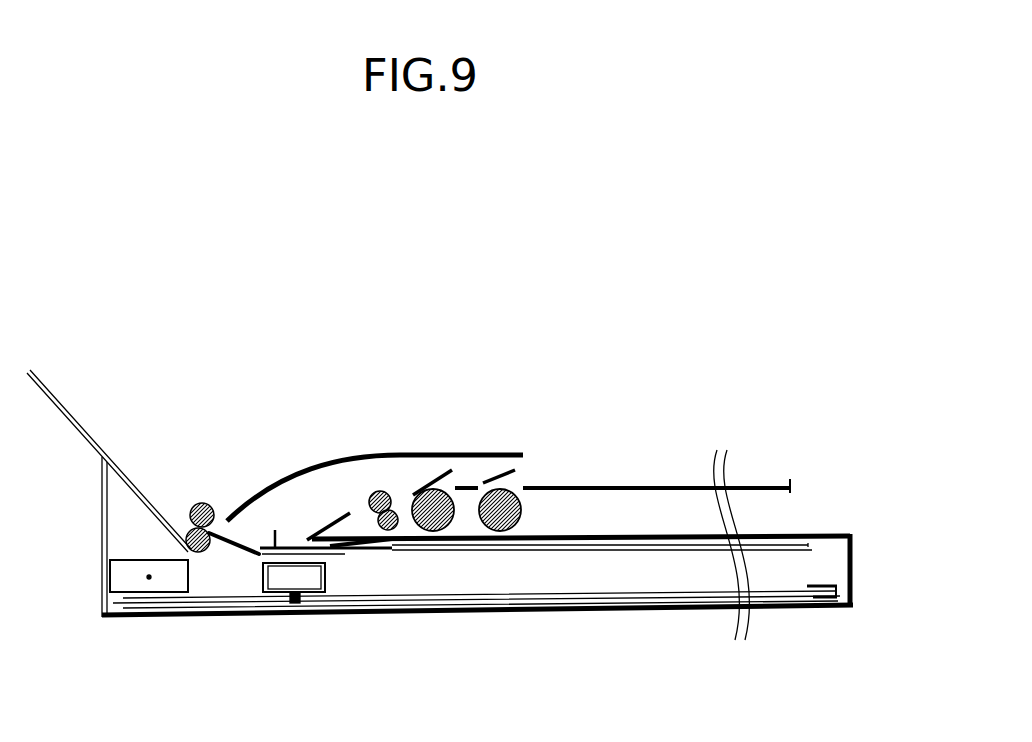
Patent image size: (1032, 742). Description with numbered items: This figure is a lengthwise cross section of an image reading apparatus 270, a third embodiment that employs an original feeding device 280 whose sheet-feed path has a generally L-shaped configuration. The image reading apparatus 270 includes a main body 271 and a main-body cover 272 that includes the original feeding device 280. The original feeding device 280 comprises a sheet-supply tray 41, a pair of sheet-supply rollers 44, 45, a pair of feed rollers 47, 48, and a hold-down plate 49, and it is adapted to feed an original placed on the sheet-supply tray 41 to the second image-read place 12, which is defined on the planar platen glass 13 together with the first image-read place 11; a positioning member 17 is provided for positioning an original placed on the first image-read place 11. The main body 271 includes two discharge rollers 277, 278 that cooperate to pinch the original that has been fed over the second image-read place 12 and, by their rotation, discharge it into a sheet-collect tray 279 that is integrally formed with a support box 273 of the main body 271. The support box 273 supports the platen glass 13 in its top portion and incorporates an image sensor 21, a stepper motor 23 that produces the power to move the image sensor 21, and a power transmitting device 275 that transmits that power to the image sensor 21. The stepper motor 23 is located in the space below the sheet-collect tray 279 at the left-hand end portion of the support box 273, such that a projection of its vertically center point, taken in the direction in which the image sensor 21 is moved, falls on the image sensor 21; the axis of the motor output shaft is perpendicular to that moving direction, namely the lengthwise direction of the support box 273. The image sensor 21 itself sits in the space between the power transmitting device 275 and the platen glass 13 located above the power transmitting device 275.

The image reading apparatus 270 is at (897, 391).
The main body 271 is at (864, 584).
The main-body cover 272 is at (838, 524).
The support box 273 is at (852, 563).
The power transmitting device 275 is at (668, 608).
The discharge roller 277 is at (210, 551).
The discharge roller 278 is at (210, 504).
The sheet-collect tray 279 is at (141, 497).
The original feeding device 280 is at (536, 438).
The stepper motor 23 is at (190, 593).
The image sensor 21 is at (300, 604).
The second image-read place 12 is at (324, 563).
The hold-down plate 49 is at (290, 545).
The feed roller 47 is at (370, 515).
The feed roller 48 is at (373, 493).
The positioning member 17 is at (383, 531).
The first image-read place 11 is at (438, 553).
The platen glass 13 is at (790, 548).
The sheet-supply roller 45 is at (458, 492).
The sheet-supply roller 44 is at (523, 503).
The sheet-supply tray 41 is at (643, 485).